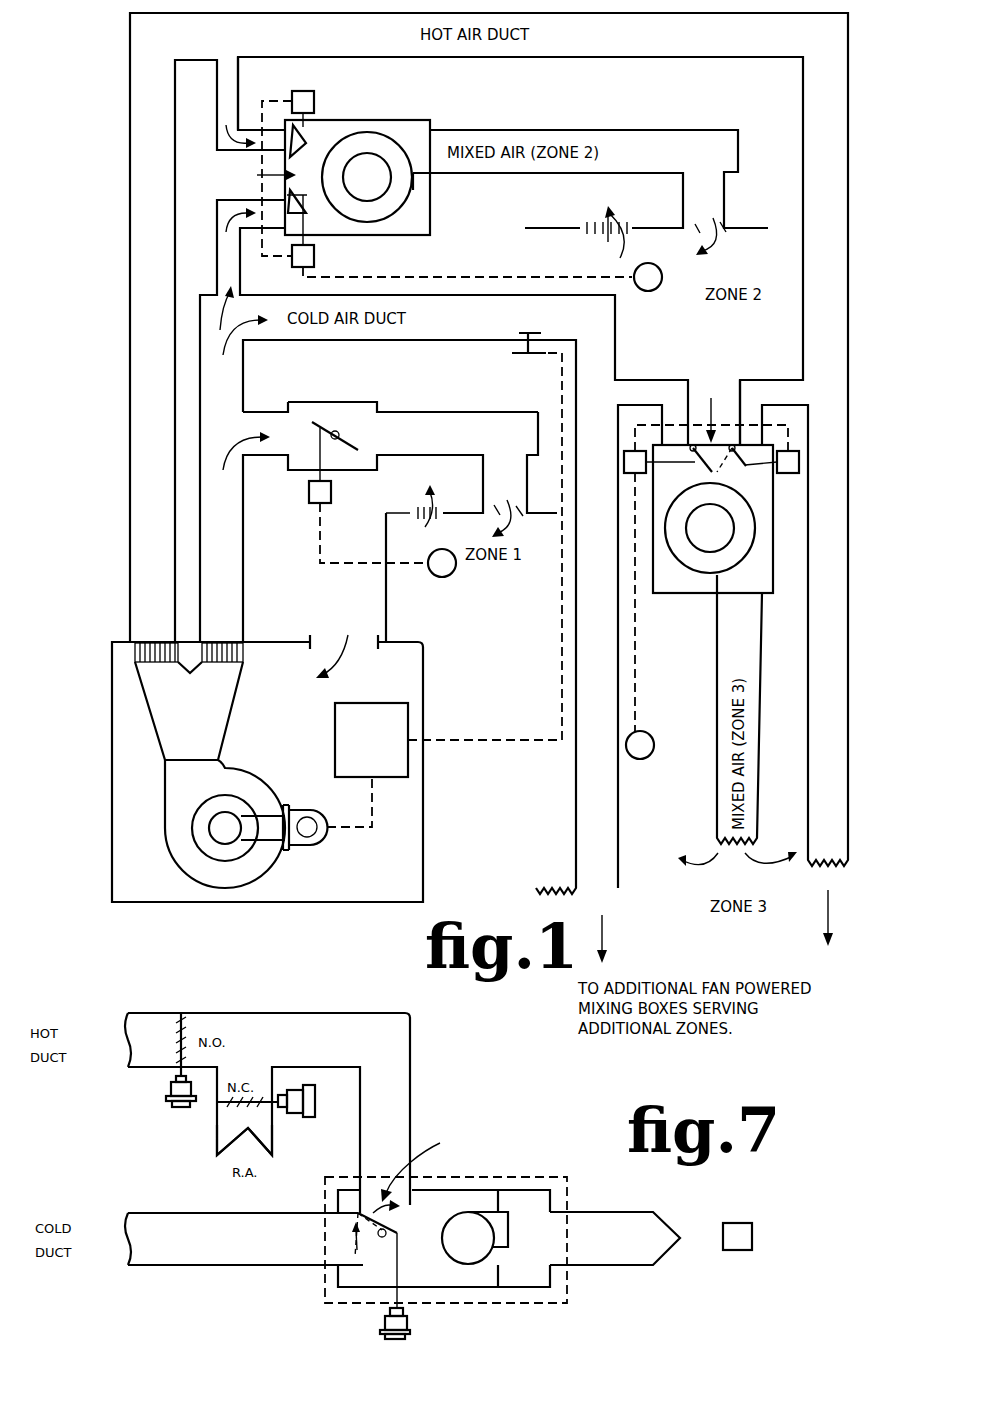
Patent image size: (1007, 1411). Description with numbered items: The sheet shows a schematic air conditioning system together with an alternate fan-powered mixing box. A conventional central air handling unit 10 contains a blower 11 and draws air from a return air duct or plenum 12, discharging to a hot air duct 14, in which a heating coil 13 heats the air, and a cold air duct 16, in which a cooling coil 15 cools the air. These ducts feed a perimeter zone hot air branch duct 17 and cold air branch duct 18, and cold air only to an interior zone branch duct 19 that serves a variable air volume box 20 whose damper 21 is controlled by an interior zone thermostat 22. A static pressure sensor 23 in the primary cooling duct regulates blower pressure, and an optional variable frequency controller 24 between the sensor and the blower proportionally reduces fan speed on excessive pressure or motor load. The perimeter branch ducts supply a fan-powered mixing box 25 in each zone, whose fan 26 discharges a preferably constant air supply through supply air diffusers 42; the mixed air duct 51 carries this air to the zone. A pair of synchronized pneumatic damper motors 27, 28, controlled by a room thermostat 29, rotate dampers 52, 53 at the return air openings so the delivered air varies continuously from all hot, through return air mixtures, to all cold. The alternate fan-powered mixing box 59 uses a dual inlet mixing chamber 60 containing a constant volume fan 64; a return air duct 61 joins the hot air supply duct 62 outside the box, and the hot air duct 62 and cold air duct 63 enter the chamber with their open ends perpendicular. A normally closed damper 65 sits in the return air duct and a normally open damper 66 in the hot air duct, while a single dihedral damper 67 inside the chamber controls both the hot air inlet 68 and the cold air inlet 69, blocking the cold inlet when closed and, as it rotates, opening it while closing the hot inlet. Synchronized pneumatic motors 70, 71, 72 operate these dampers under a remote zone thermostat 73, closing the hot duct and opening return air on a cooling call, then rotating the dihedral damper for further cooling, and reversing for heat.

In FIG. 1, the central air handling unit 10 is at (444, 830).
In FIG. 1, the blower 11 is at (182, 839).
In FIG. 1, the return air duct or plenum 12 is at (202, 154).
In FIG. 1, the heating coil 13 is at (114, 650).
In FIG. 1, the hot air duct 14 is at (135, 13).
In FIG. 1, the cooling coil 15 is at (250, 642).
In FIG. 1, the cold air duct 16 is at (322, 340).
In FIG. 1, the perimeter zone hot air branch duct 17 is at (238, 82).
In FIG. 1, the perimeter zone cold air branch duct 18 is at (242, 283).
In FIG. 1, the interior zone branch duct 19 is at (261, 412).
In FIG. 1, the variable air volume box 20 is at (375, 402).
In FIG. 1, the damper 21 is at (358, 441).
In FIG. 1, the thermostat 22 is at (452, 578).
In FIG. 1, the static pressure sensor 23 is at (528, 333).
In FIG. 1, the variable frequency controller 24 is at (408, 716).
In FIG. 1, the fan-powered mixing box 25 is at (432, 120).
In FIG. 1, the fan 26 is at (414, 210).
In FIG. 1, the damper motor 27 is at (316, 102).
In FIG. 1, the damper motor 28 is at (316, 258).
In FIG. 1, the room thermostat 29 is at (650, 292).
In FIG. 1, the supply air diffusers 42 is at (722, 233).
In FIG. 1, the mixed air duct 51 is at (573, 130).
In FIG. 1, the damper 52 is at (288, 150).
In FIG. 1, the damper 53 is at (288, 195).
In FIG. 7, the fan-powered mixing box 59 is at (502, 1158).
In FIG. 7, the dual inlet mixing chamber 60 is at (452, 1280).
In FIG. 7, the return air duct 61 is at (215, 1145).
In FIG. 7, the hot air supply duct 62 is at (150, 1013).
In FIG. 7, the cold air duct 63 is at (172, 1250).
In FIG. 7, the constant volume fan 64 is at (452, 1248).
In FIG. 7, the damper 65 is at (240, 1108).
In FIG. 7, the damper 66 is at (183, 1040).
In FIG. 7, the damper 67 is at (395, 1208).
In FIG. 7, the hot air inlet 68 is at (422, 1163).
In FIG. 7, the cold air inlet 69 is at (345, 1250).
In FIG. 7, the pneumatic motor 70 is at (290, 1115).
In FIG. 7, the pneumatic motor 71 is at (168, 1090).
In FIG. 7, the pneumatic motor 72 is at (378, 1322).
In FIG. 7, the remote zone thermostat 73 is at (740, 1250).